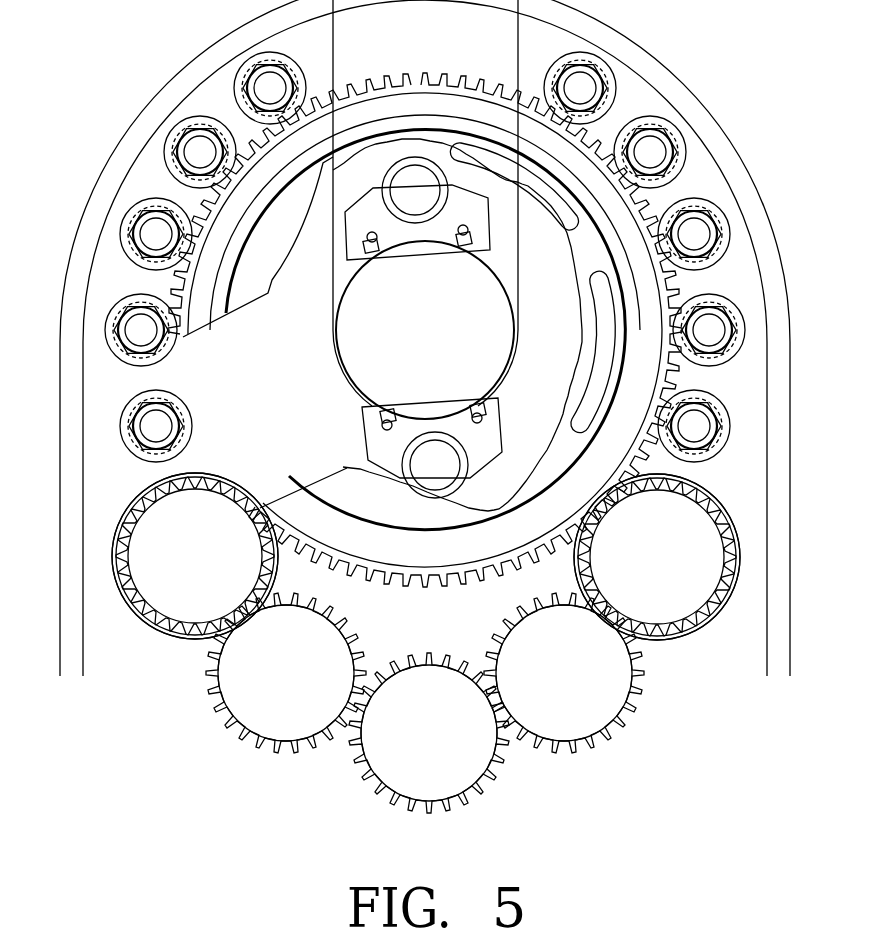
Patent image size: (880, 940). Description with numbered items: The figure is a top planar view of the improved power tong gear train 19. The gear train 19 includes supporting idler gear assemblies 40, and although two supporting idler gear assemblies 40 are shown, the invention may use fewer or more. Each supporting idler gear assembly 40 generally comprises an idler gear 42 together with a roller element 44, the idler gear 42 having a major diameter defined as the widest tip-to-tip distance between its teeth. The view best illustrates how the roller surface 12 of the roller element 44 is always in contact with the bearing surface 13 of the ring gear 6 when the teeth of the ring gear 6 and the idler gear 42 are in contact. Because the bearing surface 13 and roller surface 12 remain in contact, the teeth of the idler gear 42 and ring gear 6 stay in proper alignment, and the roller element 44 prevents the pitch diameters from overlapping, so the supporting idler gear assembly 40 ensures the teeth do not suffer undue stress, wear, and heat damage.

The ring gear 6 is at (323, 523).
The roller surface 12 is at (200, 477).
The bearing surface 13 is at (262, 507).
The gear train 19 is at (630, 758).
The supporting idler gear assembly 40 is at (97, 543).
The idler gear 42 is at (215, 549).
The roller element 44 is at (120, 493).